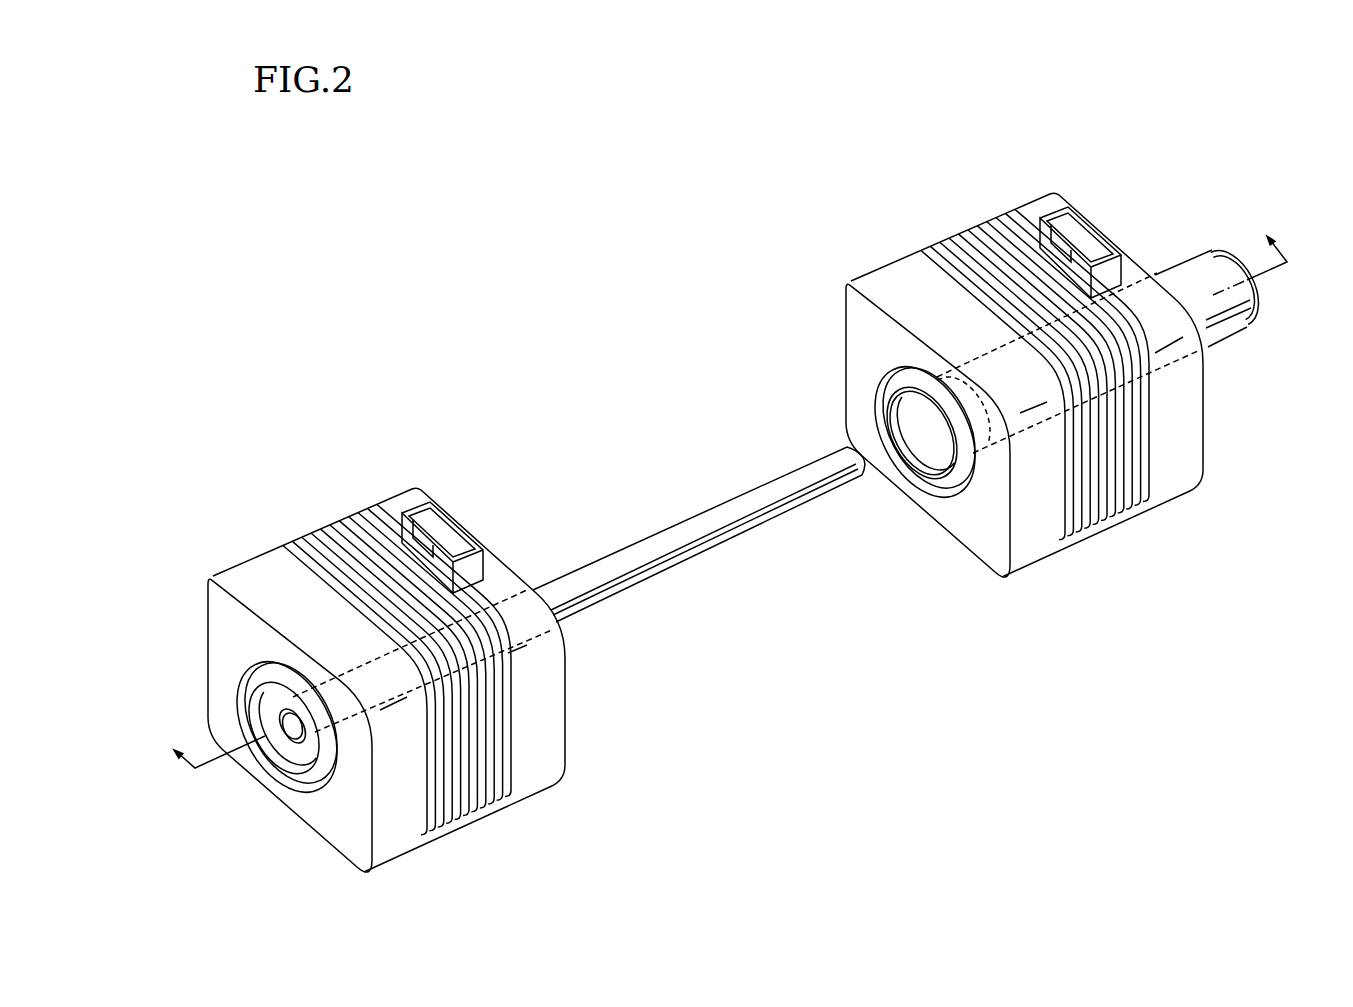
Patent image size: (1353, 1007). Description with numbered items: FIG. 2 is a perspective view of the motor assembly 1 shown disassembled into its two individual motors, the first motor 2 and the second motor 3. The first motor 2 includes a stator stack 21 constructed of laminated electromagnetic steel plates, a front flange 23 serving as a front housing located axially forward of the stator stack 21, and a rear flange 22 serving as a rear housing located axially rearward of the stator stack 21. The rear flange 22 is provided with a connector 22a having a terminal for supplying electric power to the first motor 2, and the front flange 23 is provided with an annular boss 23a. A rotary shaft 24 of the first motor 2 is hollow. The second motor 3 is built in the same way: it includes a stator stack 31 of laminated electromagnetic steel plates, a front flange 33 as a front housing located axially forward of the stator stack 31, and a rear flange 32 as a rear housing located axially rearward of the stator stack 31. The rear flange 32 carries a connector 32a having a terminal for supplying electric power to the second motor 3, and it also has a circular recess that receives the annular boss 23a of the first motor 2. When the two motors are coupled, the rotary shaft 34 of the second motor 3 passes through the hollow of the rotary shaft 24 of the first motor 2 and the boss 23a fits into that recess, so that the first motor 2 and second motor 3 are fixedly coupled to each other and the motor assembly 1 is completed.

The motor assembly 1 is at (542, 262).
The first motor 2 is at (1058, 373).
The second motor 3 is at (312, 507).
The stator stack 21 is at (1044, 390).
The rear flange 22 is at (1060, 362).
The connector 22a is at (1091, 223).
The front flange 23 is at (977, 441).
The annular boss 23a is at (928, 465).
The rotary shaft 24 is at (1212, 271).
The stator stack 31 is at (475, 793).
The rear flange 32 is at (540, 765).
The connector 32a is at (445, 535).
The front flange 33 is at (400, 827).
The rotary shaft 34 is at (730, 508).